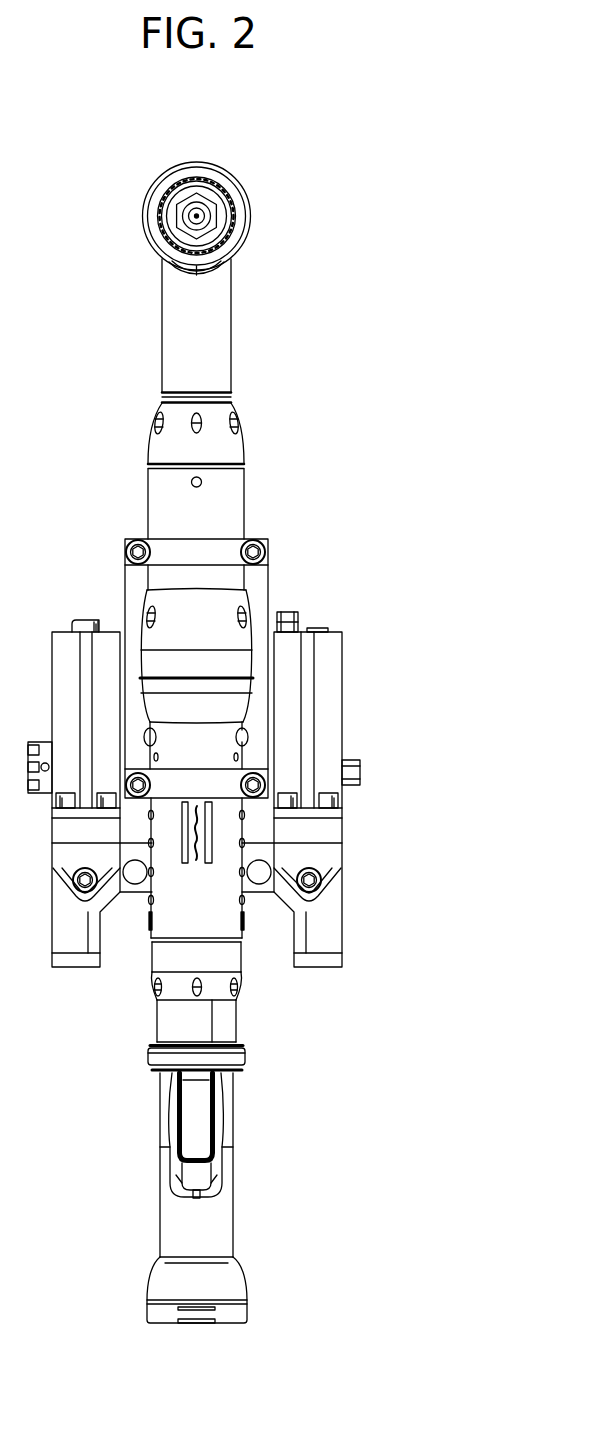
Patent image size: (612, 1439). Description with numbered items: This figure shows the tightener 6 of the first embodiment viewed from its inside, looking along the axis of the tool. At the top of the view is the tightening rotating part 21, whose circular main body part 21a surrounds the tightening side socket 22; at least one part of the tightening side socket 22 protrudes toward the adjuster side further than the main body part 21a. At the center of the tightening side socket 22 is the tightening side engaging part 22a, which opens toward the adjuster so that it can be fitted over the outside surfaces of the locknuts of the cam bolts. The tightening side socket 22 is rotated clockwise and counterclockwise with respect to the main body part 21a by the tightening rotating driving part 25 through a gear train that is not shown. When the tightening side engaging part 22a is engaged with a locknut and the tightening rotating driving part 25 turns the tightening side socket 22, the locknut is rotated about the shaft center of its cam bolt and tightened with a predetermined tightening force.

The tightening rotating part 21 is at (236, 190).
The main body part 21a is at (150, 215).
The tightening side socket 22 is at (205, 192).
The tightening side engaging part 22a is at (198, 232).
The tightener 6 is at (254, 430).
The tightening rotating driving part 25 is at (168, 1105).